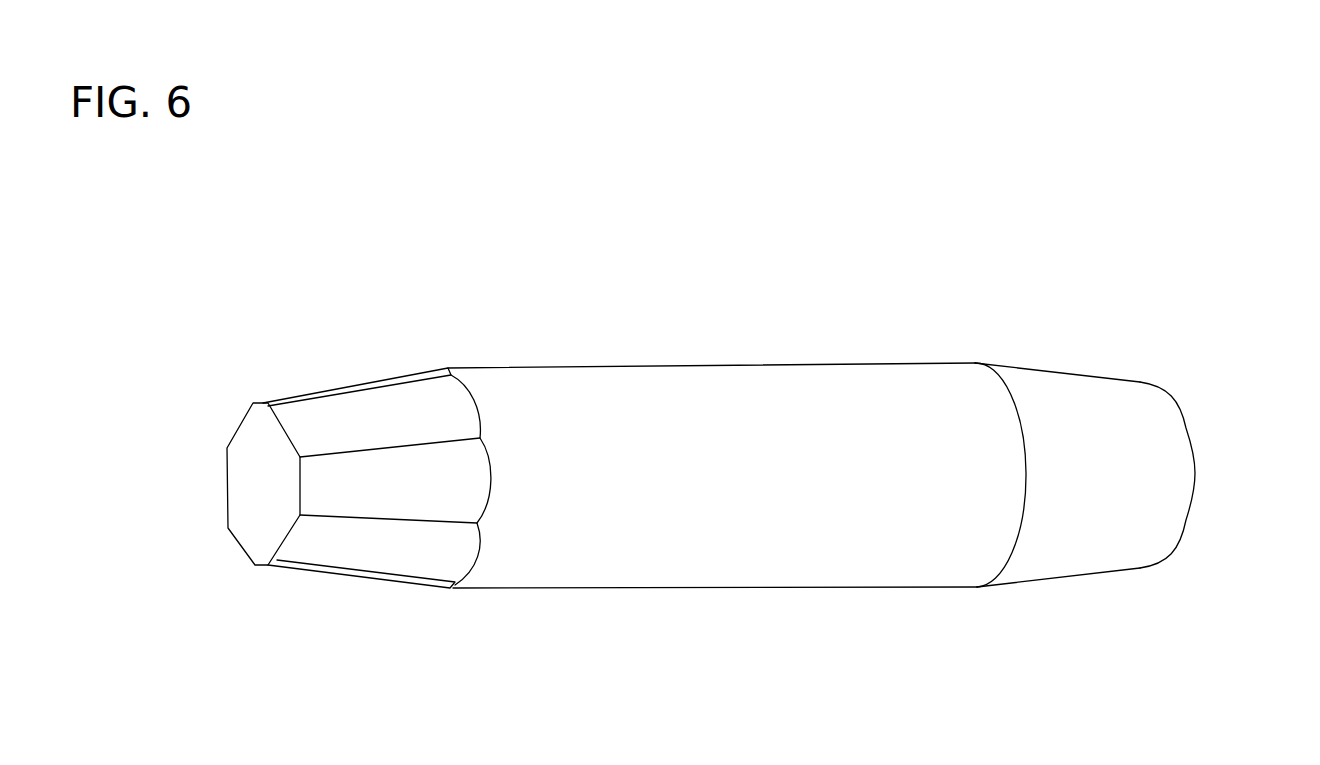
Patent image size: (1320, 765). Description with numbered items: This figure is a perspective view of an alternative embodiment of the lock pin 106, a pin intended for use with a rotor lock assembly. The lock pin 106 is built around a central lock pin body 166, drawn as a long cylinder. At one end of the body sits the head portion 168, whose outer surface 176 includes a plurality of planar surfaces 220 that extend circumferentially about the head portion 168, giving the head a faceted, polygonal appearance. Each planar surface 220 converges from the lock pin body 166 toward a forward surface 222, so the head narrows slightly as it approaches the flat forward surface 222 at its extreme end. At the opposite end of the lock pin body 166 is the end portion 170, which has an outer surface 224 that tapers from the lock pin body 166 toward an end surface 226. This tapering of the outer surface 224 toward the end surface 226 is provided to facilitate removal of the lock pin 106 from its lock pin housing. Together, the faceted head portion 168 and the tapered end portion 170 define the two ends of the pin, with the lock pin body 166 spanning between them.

The lock pin 106 is at (724, 409).
The lock pin body 166 is at (747, 365).
The head portion 168 is at (319, 442).
The end portion 170 is at (1138, 421).
The outer surface 176 is at (353, 374).
The planar surfaces 220 is at (328, 412).
The forward surface 222 is at (258, 433).
The outer surface 224 is at (1113, 378).
The end surface 226 is at (1205, 447).